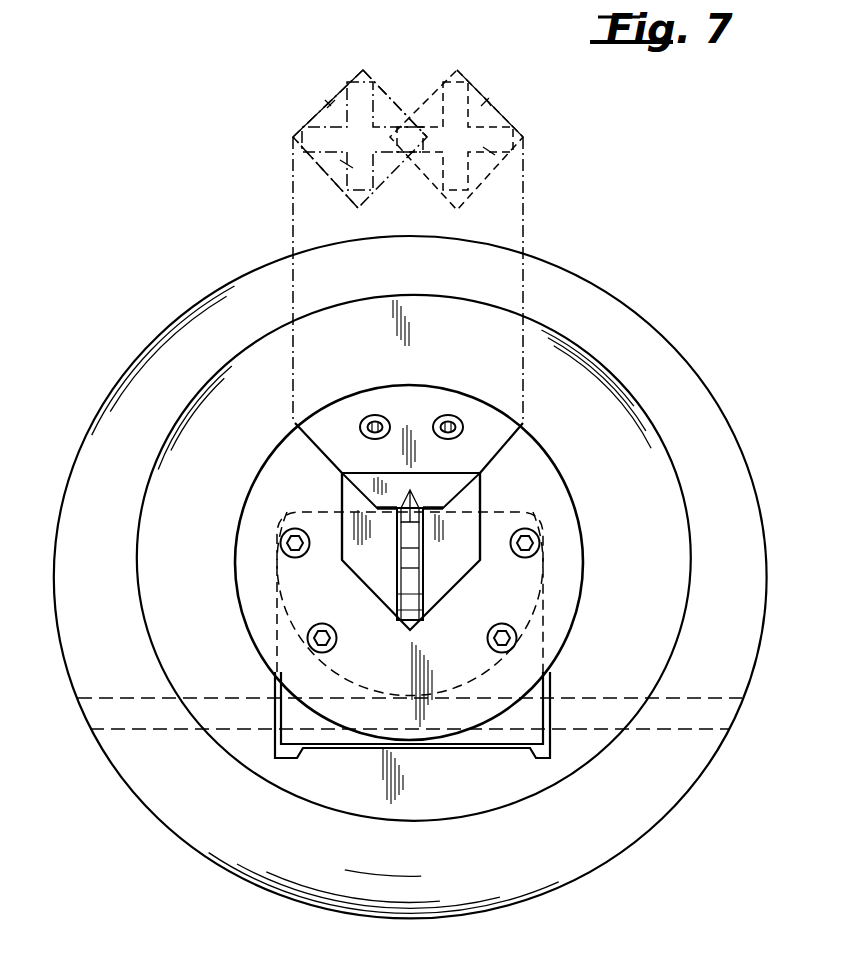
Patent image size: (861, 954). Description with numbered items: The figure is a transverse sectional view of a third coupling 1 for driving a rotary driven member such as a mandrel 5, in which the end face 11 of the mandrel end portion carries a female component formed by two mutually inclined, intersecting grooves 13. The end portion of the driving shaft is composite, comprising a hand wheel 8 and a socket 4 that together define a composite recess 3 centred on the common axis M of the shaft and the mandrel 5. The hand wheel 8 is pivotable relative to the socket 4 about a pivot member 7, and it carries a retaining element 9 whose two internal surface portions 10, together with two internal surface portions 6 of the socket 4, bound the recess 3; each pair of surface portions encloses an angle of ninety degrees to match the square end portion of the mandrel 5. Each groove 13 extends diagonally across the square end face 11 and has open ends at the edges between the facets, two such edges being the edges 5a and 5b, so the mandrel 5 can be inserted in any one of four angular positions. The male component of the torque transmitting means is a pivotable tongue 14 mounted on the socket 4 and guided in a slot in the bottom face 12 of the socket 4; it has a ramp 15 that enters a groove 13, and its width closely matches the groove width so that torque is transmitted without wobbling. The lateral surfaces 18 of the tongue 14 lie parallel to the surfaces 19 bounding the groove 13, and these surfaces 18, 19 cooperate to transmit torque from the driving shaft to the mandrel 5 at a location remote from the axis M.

The coupling 1 is at (612, 293).
The recess 3 is at (438, 586).
The socket 4 is at (353, 550).
The mandrel 5 is at (330, 110).
The edge 5a is at (363, 67).
The edge 5b is at (357, 210).
The internal surface portions 6 is at (390, 603).
The pivot member 7 is at (208, 712).
The hand wheel 8 is at (647, 330).
The retaining element 9 is at (472, 455).
The internal surface portions 10 is at (405, 503).
The end face 11 is at (327, 105).
The bottom face 12 is at (350, 533).
The groove 13 is at (363, 79).
The male component 14 is at (423, 587).
The ramp 15 is at (413, 568).
The lateral surfaces 18 is at (397, 548).
The surfaces 19 is at (353, 168).
The axis M is at (455, 137).